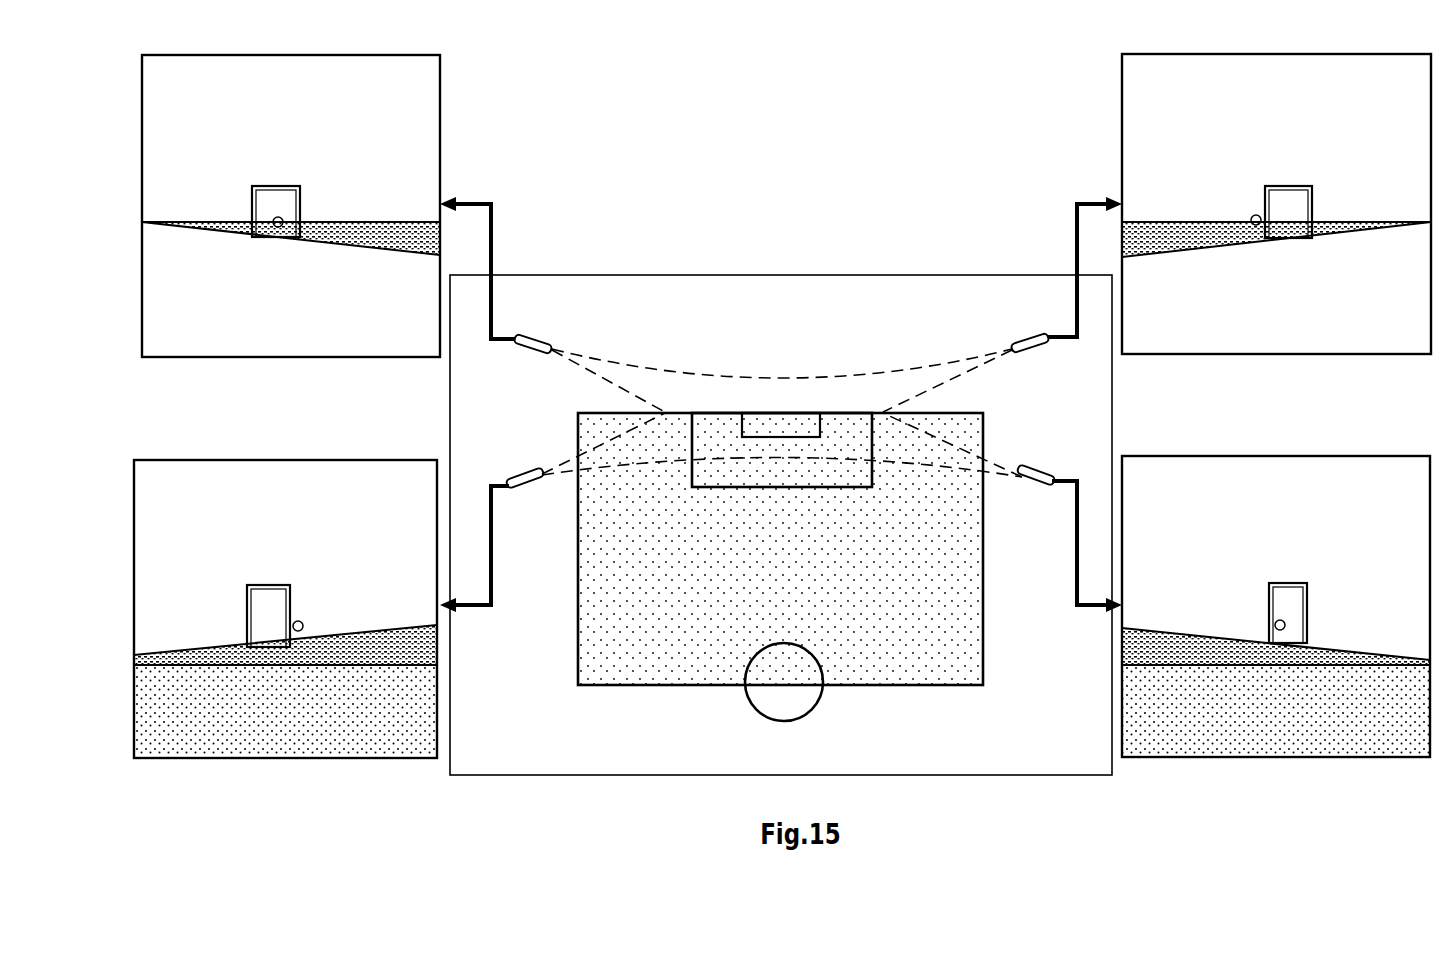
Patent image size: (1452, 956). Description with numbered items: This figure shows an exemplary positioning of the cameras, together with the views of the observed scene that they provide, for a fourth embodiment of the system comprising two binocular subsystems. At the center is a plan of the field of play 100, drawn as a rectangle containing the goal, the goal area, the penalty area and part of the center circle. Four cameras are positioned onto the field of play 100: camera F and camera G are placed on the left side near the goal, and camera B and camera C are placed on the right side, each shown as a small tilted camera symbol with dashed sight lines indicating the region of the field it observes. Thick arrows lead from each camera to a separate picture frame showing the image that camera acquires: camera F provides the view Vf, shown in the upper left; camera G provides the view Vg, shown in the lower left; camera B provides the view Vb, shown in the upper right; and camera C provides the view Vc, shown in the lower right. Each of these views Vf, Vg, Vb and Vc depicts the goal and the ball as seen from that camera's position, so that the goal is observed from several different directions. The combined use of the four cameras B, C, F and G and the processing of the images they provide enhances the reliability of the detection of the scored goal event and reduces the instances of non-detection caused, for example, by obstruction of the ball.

The field of play 100 is at (743, 275).
The camera F is at (496, 275).
The camera B is at (1066, 275).
The camera G is at (492, 539).
The camera C is at (1069, 538).
The view Vf VF is at (440, 125).
The view Vb VB is at (1122, 136).
The view Vg VG is at (293, 760).
The view Vc VC is at (1263, 760).